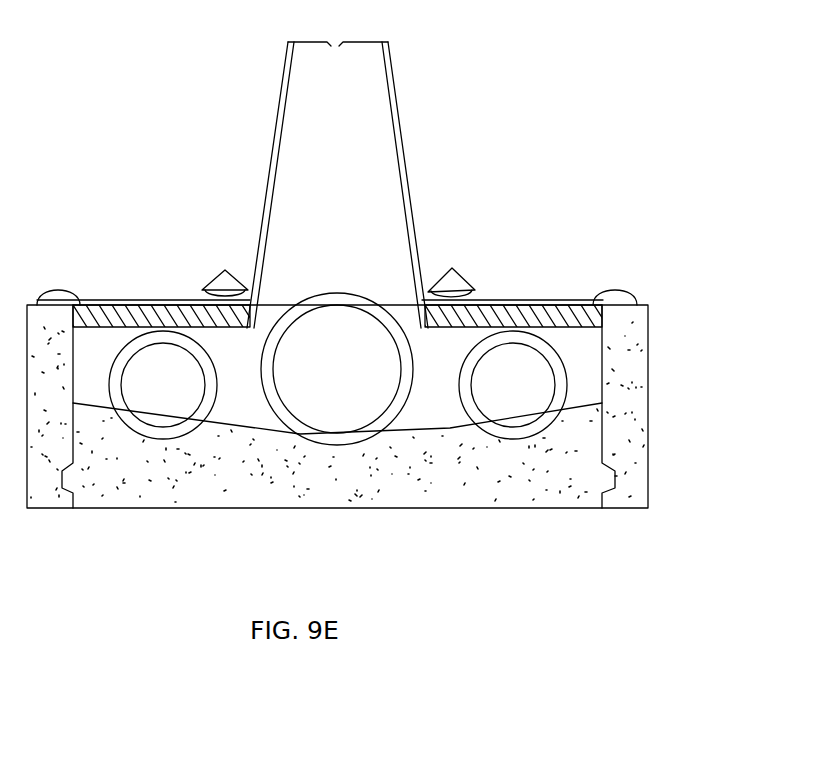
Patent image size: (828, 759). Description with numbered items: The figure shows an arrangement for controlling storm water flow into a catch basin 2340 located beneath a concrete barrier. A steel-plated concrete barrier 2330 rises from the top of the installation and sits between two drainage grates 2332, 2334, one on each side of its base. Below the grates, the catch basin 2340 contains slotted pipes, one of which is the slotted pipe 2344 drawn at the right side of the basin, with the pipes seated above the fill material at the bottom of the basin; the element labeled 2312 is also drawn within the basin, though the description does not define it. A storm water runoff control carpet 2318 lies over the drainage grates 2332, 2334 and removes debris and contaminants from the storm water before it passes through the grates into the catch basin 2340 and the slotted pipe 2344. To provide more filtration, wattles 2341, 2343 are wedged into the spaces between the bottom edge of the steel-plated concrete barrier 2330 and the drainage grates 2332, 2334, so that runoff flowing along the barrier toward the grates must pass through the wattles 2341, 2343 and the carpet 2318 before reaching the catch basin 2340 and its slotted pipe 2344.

The left conduit tube 2312 is at (168, 400).
The carpet 2318 is at (160, 301).
The steel-plated concrete barrier 2330 is at (368, 106).
The drainage grate 2332 is at (122, 308).
The drainage grate 2334 is at (567, 304).
The catch basin 2340 is at (440, 403).
The wattle 2341 is at (226, 288).
The wattle 2343 is at (448, 284).
The slotted pipe 2344 is at (563, 377).